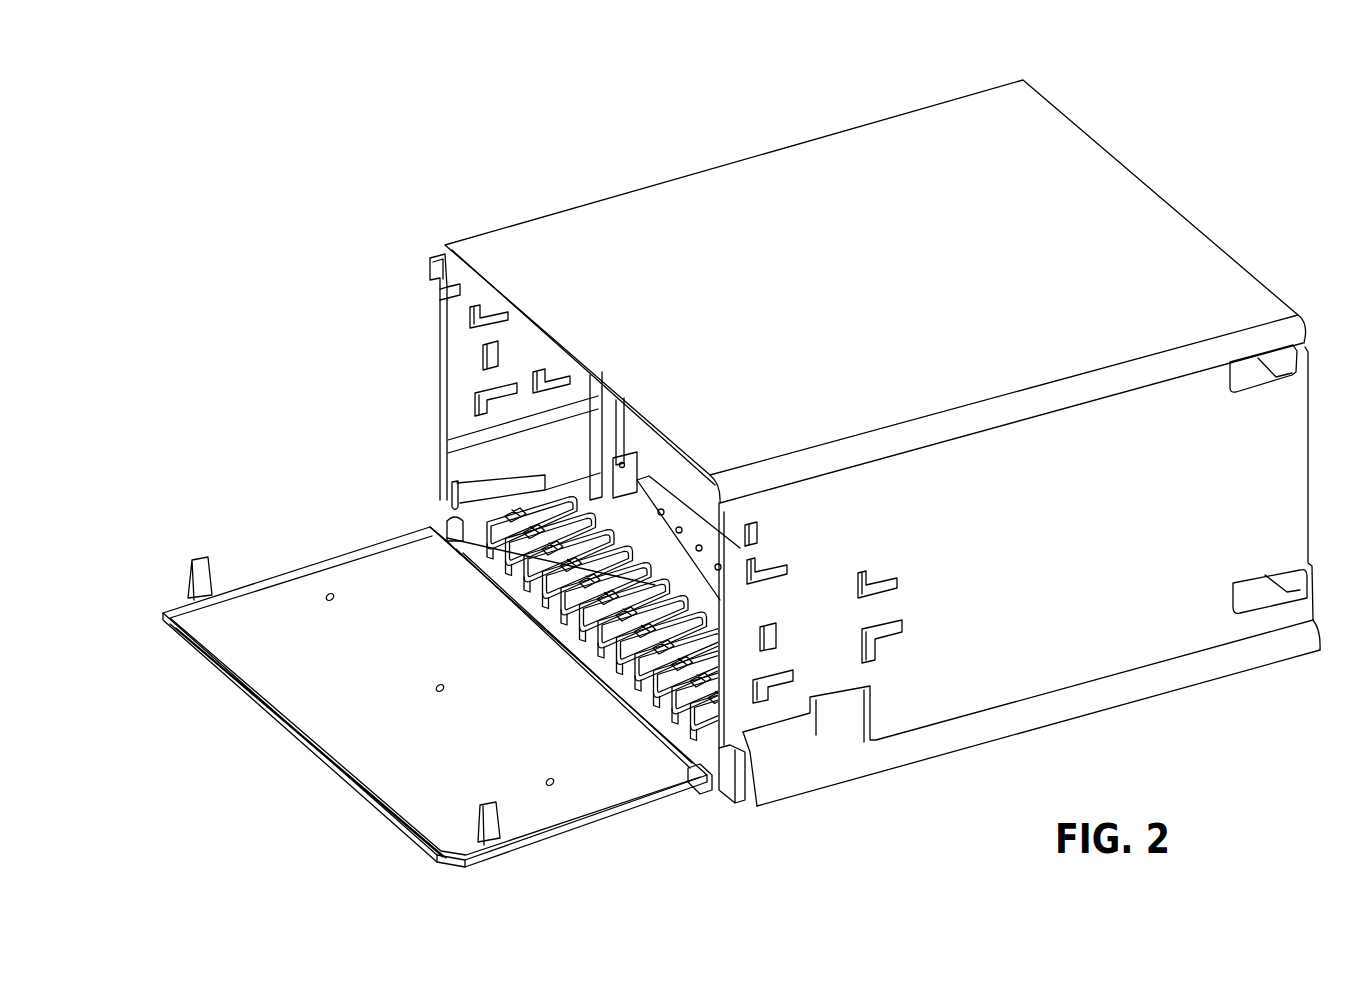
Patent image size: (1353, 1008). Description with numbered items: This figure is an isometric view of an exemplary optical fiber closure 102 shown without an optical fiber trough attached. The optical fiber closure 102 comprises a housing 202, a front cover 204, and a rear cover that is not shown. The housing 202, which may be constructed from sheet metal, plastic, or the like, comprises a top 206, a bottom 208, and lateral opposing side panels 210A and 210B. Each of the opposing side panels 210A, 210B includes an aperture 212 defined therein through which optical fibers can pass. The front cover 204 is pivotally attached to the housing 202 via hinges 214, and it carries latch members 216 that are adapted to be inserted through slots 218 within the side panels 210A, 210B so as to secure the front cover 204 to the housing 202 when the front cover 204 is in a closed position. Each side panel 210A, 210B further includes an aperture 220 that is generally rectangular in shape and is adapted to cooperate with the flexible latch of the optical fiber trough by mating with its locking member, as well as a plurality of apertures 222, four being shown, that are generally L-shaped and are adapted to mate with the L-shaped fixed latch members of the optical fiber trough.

The optical fiber closure 102 is at (473, 146).
The housing 202 is at (840, 461).
The front cover 204 is at (402, 786).
The top 206 is at (910, 300).
The bottom 208 is at (848, 797).
The side panel 210A is at (1096, 553).
The side panel 210B is at (762, 134).
The aperture 212 is at (478, 505).
The hinge 214 is at (447, 545).
The latch member 216 is at (202, 566).
The slot 218 is at (760, 529).
The aperture 220 is at (780, 626).
The aperture 222 is at (790, 566).